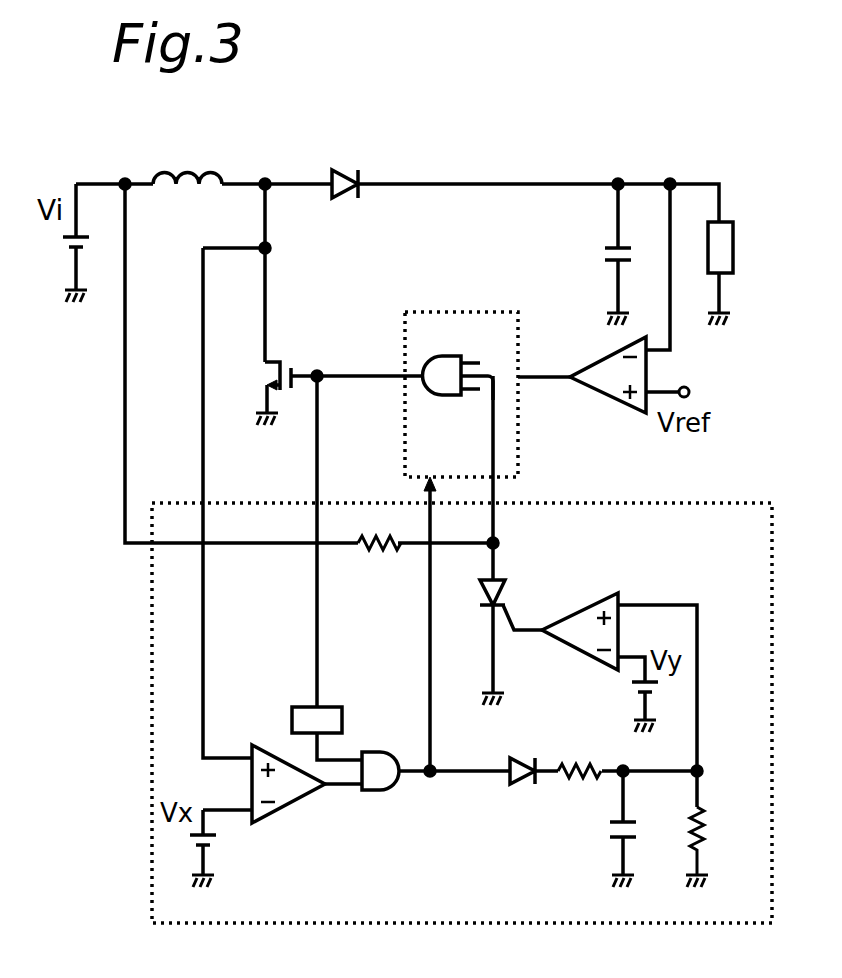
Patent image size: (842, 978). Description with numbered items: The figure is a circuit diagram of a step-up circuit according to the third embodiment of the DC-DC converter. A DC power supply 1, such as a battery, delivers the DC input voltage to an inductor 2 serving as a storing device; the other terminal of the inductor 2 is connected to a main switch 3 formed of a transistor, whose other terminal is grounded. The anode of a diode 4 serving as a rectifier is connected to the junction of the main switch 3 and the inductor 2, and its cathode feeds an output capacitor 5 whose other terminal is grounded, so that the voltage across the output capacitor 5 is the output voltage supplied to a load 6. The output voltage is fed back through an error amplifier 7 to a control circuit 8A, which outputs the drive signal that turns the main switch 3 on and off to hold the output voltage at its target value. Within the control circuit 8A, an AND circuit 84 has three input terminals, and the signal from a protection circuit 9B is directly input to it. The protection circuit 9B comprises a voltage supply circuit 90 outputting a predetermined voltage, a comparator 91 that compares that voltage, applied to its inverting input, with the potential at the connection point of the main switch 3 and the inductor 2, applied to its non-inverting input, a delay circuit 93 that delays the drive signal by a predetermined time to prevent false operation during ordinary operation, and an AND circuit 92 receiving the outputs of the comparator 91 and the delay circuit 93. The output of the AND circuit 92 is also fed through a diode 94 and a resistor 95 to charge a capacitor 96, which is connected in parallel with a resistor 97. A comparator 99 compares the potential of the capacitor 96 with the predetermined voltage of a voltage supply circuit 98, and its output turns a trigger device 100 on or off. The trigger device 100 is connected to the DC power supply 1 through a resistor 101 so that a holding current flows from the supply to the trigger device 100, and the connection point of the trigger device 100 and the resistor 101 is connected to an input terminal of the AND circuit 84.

The DC power supply 1 is at (84, 245).
The inductor 2 is at (203, 178).
The main switch 3 is at (291, 362).
The diode 4 is at (355, 170).
The output capacitor 5 is at (603, 256).
The load 6 is at (727, 275).
The error amplifier 7 is at (617, 403).
The control circuit 8A is at (453, 312).
The AND circuit 84 is at (438, 397).
The protection circuit 9B is at (152, 682).
The voltage supply circuit 90 is at (215, 847).
The comparator 91 is at (297, 800).
The AND circuit 92 is at (380, 793).
The delay circuit 93 is at (290, 707).
The diode 94 is at (518, 787).
The resistor 95 is at (578, 785).
The capacitor 96 is at (640, 838).
The resistor 97 is at (700, 806).
The voltage supply circuit 98 is at (655, 693).
The comparator 99 is at (577, 650).
The trigger device 100 is at (503, 583).
The resistor 101 is at (380, 548).